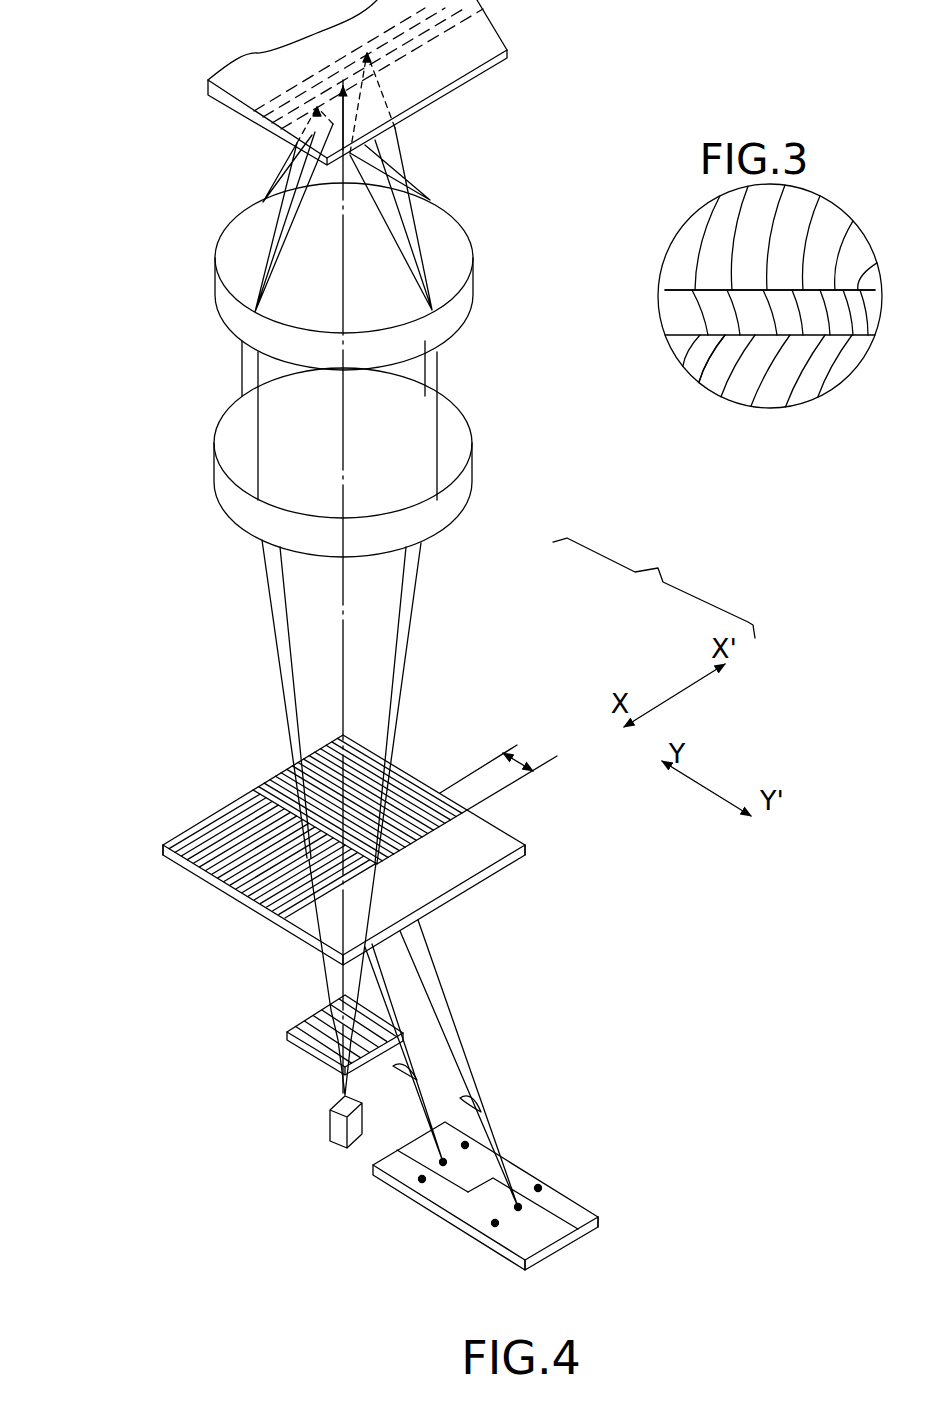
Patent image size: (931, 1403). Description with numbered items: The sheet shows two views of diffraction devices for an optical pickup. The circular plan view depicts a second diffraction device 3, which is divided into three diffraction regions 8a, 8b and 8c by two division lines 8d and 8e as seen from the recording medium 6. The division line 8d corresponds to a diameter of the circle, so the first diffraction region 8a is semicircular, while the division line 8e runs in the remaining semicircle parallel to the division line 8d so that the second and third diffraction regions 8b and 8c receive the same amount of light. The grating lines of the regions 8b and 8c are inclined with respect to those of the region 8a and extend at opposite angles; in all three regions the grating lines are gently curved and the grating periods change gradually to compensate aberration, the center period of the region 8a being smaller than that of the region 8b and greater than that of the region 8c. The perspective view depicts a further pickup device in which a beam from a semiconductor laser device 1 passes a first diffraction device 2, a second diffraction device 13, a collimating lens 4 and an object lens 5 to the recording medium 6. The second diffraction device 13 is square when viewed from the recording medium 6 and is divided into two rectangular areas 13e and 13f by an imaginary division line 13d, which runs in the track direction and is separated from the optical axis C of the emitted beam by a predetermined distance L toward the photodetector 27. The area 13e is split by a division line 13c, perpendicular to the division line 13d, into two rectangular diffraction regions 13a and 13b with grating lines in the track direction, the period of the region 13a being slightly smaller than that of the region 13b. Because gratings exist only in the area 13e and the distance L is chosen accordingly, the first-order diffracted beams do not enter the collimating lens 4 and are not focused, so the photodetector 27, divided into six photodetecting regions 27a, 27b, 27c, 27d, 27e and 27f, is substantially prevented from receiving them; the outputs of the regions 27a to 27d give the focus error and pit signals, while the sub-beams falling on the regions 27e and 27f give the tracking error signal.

In FIG. 4, the semiconductor laser device 1 is at (330, 1138).
In FIG. 4, the first diffraction device 2 is at (288, 1043).
In FIG. 3, the second diffraction device 3 is at (740, 318).
In FIG. 4, the collimating lens 4 is at (215, 486).
In FIG. 4, the object lens 5 is at (218, 299).
In FIG. 4, the recording medium 6 is at (460, 82).
In FIG. 3, the first diffraction region 8a is at (668, 242).
In FIG. 3, the second diffraction region 8b is at (658, 313).
In FIG. 3, the third diffraction region 8c is at (670, 353).
In FIG. 3, the division line 8d is at (677, 288).
In FIG. 3, the division line 8e is at (712, 372).
In FIG. 4, the second diffraction device 13 is at (332, 839).
In FIG. 4, the first diffraction region 13a is at (285, 773).
In FIG. 4, the second diffraction region 13b is at (220, 837).
In FIG. 4, the division line 13c is at (267, 803).
In FIG. 4, the division line 13d is at (310, 905).
In FIG. 4, the area 13e is at (158, 878).
In FIG. 4, the area 13f is at (513, 838).
In FIG. 4, the photodetector 27 is at (488, 1213).
In FIG. 4, the photodetecting region 27a is at (547, 1200).
In FIG. 4, the photodetecting region 27b is at (543, 1238).
In FIG. 4, the photodetecting region 27c is at (410, 1155).
In FIG. 4, the photodetecting region 27d is at (507, 1236).
In FIG. 4, the photodetecting region 27e is at (522, 1175).
In FIG. 4, the photodetecting region 27f is at (548, 1222).
In FIG. 4, the optical axis C is at (346, 580).
In FIG. 4, the predetermined distance L is at (426, 744).